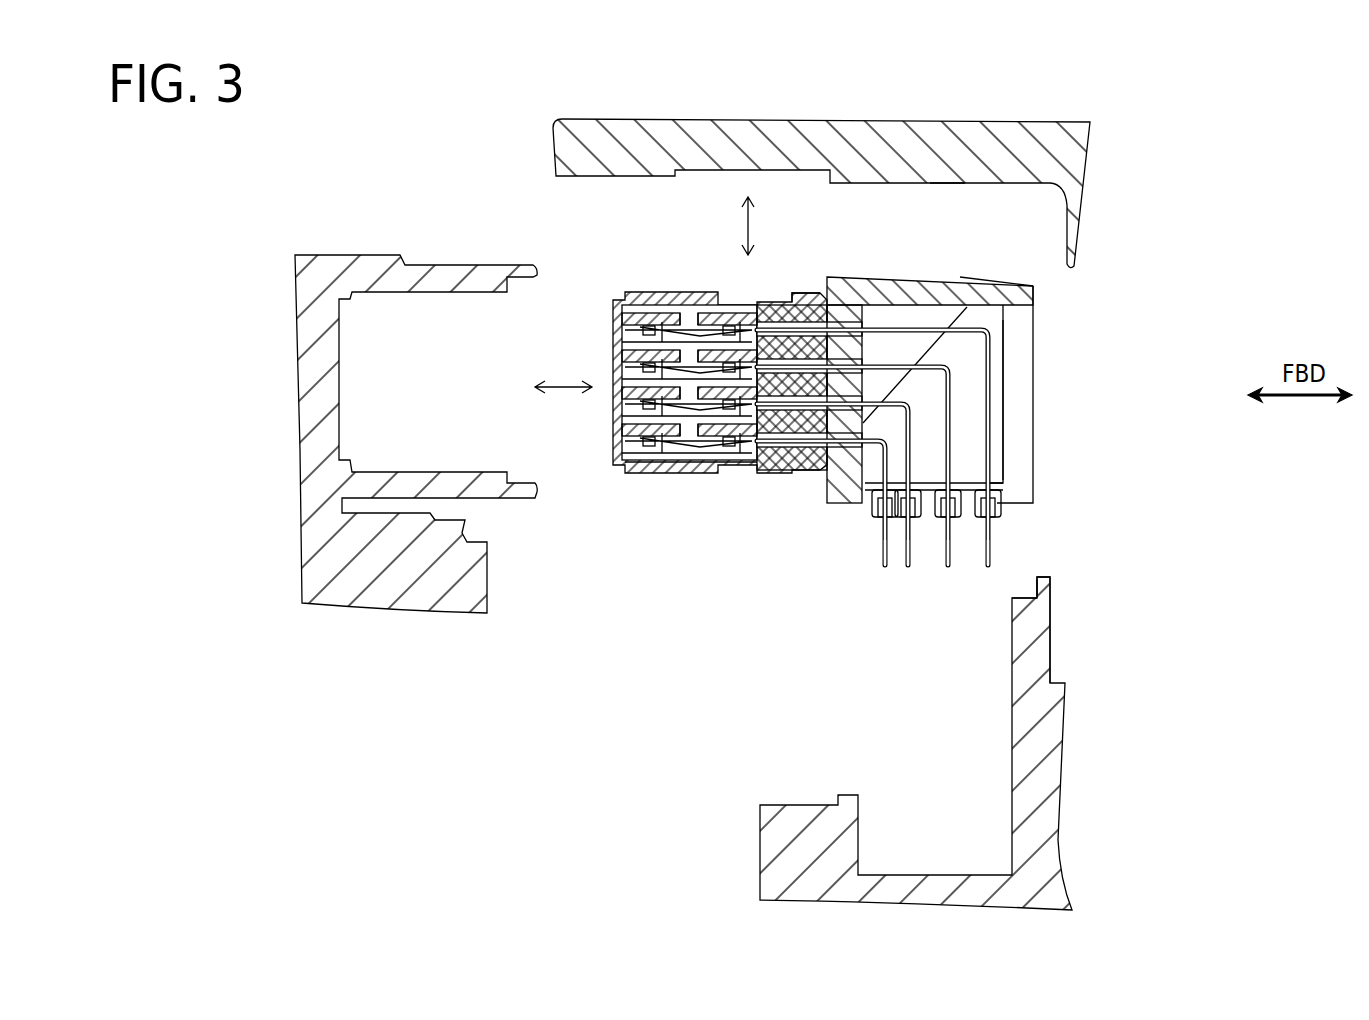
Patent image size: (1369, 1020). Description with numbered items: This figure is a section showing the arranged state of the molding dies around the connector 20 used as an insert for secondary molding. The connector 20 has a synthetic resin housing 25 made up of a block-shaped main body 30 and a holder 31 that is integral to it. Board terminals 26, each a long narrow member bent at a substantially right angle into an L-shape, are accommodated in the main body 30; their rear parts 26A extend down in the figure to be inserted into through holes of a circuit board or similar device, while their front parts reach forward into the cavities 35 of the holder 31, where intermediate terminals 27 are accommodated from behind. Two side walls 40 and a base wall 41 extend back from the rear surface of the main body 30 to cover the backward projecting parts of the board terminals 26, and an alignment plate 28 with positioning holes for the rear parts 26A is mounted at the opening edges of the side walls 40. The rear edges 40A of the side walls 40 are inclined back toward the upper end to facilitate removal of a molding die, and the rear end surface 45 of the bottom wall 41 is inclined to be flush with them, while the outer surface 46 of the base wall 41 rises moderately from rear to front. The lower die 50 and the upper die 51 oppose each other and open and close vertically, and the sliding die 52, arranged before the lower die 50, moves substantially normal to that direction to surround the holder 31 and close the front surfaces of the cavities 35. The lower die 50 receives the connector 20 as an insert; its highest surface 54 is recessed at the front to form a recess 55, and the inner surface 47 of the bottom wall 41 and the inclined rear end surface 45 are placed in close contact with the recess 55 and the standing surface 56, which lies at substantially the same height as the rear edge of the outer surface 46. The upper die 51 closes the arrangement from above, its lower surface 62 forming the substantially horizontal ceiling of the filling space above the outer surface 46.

The connector 20 is at (874, 402).
The housing 25 is at (737, 399).
The board terminal 26 is at (950, 412).
The rear part of board terminal 26A is at (991, 530).
The intermediate terminal 27 is at (697, 362).
The alignment plate 28 is at (968, 490).
The main body 30 is at (801, 296).
The holder 31 is at (683, 462).
The cavity 35 is at (660, 454).
The side wall 40 is at (978, 361).
The rear edge of side wall 40A is at (1030, 386).
The base wall 41 is at (918, 291).
The rear end surface 45 is at (1033, 291).
The outer surface 46 is at (977, 291).
The inner surface 47 is at (1013, 306).
The lower die 50 is at (1045, 775).
The upper die 51 is at (885, 152).
The sliding die 52 is at (383, 270).
The highest surface 54 is at (1045, 574).
The recess 55 is at (1015, 598).
The standing surface 56 is at (1040, 578).
The lower surface of upper die 62 is at (941, 185).